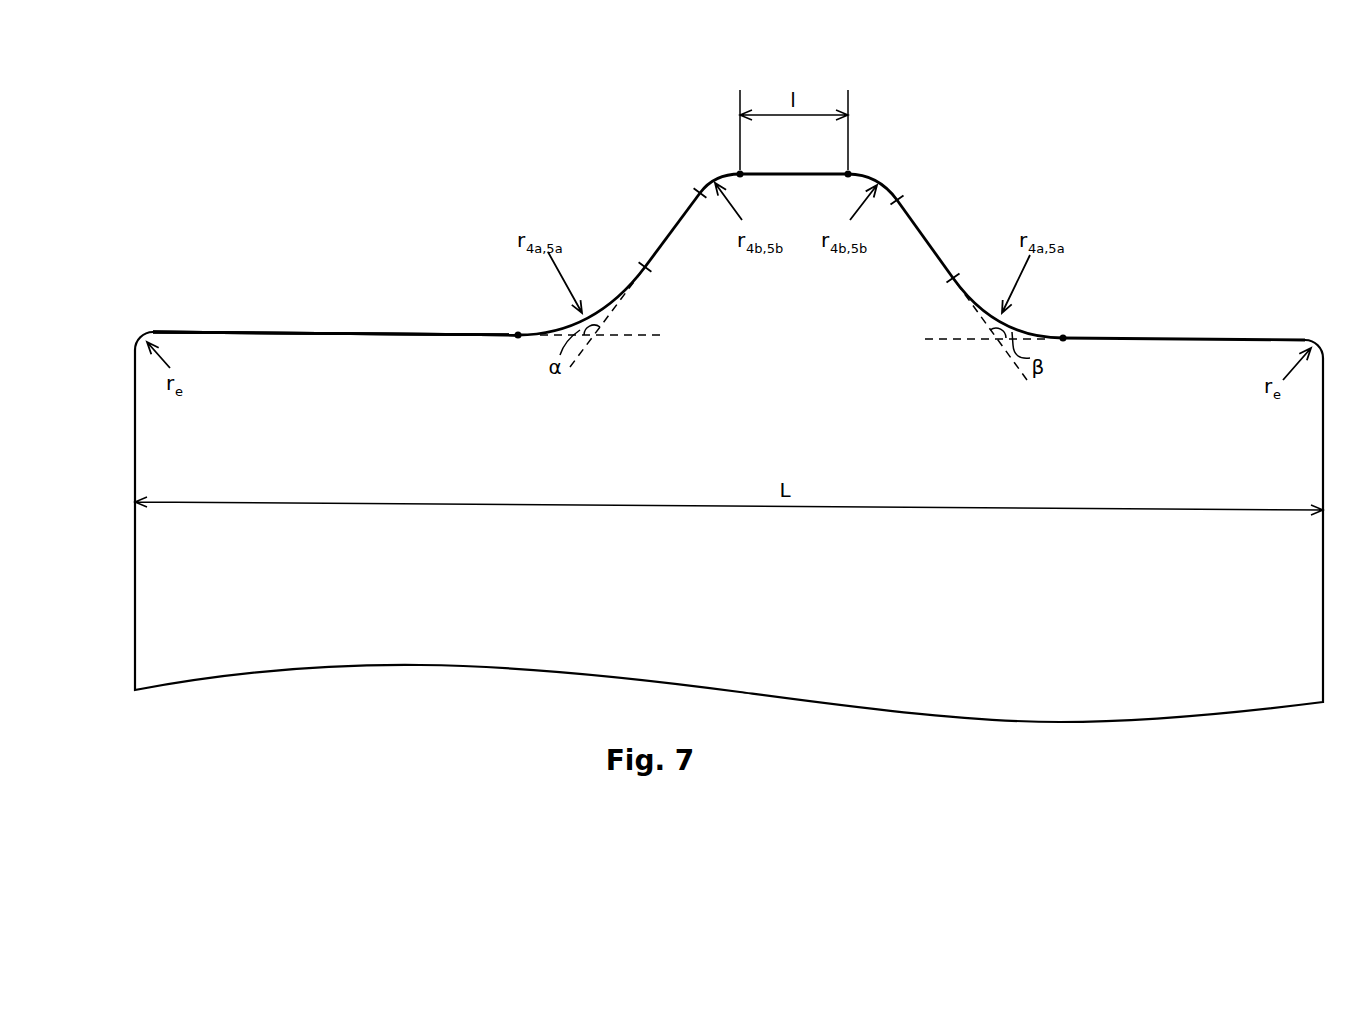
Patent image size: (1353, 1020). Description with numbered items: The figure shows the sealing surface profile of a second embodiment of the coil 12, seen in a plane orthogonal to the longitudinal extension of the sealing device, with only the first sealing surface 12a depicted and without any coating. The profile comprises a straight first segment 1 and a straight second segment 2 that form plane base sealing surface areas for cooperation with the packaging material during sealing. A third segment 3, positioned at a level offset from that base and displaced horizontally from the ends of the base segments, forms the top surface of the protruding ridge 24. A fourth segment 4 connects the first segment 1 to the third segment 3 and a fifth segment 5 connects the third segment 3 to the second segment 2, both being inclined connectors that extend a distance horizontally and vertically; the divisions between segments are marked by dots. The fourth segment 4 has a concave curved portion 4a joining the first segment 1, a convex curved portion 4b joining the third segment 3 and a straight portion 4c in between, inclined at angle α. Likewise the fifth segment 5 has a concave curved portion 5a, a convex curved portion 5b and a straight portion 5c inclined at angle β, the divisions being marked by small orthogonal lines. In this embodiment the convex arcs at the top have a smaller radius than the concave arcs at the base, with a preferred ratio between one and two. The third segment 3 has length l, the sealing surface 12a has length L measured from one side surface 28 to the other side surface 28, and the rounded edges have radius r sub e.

The first segment 1 is at (233, 330).
The second segment 2 is at (1180, 338).
The third segment 3 is at (800, 172).
The fourth segment 4 is at (621, 228).
The curved portion 4a is at (563, 325).
The curved portion 4b is at (707, 183).
The straight portion 4c is at (668, 232).
The fifth segment 5 is at (970, 228).
The curved portion 5a is at (1042, 325).
The curved portion 5b is at (875, 178).
The straight portion 5c is at (943, 252).
The coil 12 is at (330, 330).
The first sealing surface 12a is at (335, 333).
The protruding ridge 24 is at (729, 193).
The side surface 28 is at (135, 392).